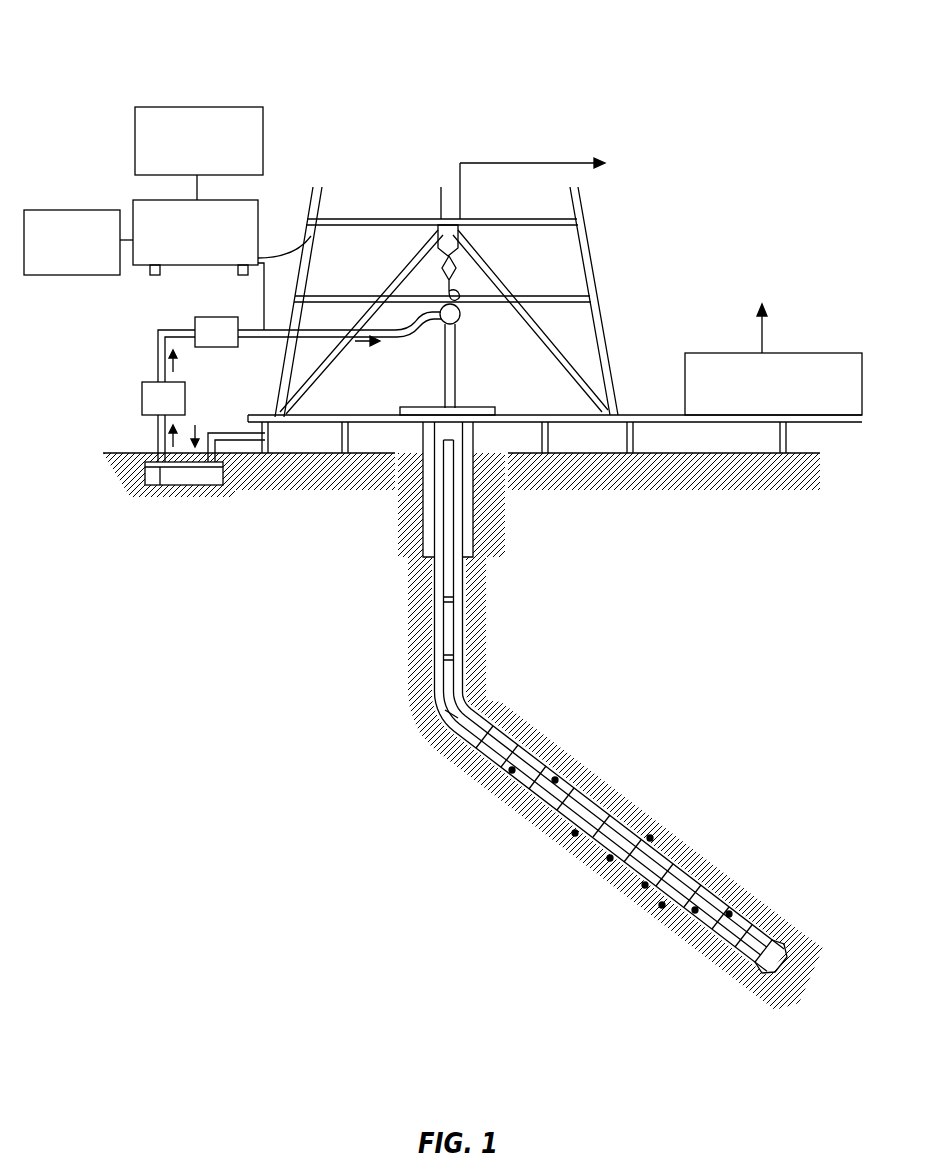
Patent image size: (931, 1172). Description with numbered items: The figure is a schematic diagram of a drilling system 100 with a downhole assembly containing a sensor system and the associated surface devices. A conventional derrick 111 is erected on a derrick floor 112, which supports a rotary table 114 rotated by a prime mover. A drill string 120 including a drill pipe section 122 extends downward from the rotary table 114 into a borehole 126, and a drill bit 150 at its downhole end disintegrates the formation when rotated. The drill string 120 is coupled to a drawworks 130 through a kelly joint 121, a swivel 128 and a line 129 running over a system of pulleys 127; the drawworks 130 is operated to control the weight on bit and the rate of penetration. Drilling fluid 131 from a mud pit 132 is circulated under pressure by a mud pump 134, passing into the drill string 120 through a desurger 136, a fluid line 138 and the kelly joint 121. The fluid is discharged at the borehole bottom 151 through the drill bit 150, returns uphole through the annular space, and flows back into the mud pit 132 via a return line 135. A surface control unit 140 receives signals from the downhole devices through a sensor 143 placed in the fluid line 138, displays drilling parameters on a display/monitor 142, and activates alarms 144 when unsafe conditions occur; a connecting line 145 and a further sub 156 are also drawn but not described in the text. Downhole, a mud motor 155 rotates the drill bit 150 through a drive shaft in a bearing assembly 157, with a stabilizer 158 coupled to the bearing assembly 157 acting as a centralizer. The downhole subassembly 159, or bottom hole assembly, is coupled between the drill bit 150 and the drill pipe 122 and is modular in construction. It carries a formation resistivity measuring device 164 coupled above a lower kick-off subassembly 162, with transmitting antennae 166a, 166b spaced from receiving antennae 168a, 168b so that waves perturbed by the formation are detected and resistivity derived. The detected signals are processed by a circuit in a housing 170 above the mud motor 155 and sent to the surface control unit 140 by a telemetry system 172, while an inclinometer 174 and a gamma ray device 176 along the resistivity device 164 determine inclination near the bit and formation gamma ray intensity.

The drilling system 100 is at (120, 48).
The derrick 111 is at (598, 288).
The derrick floor 112 is at (622, 413).
The rotary table 114 is at (472, 407).
The drill string 120 is at (462, 580).
The kelly joint 121 is at (458, 360).
The drill pipe section 122 is at (436, 640).
The borehole 126 is at (480, 700).
The system of pulleys 127 is at (498, 712).
The swivel 128 is at (440, 320).
The line 129 is at (460, 215).
The drawworks 130 is at (745, 353).
The drilling fluid 131 is at (160, 487).
The mud pit 132 is at (210, 487).
The mud pump 134 is at (142, 395).
The return line 135 is at (292, 440).
The desurger 136 is at (200, 316).
The fluid line 138 is at (257, 347).
The surface control unit 140 is at (257, 200).
The display/monitor 142 is at (237, 92).
The sensor 143 is at (263, 322).
The alarms 144 is at (60, 210).
The communication line 145 is at (311, 243).
The drill bit 150 is at (800, 960).
The borehole bottom 151 is at (770, 995).
The mud motor 155 is at (562, 750).
The drill collar 156 is at (582, 777).
The bearing assembly 157 is at (722, 950).
The stabilizer 158 is at (758, 925).
The downhole subassembly 159 is at (586, 708).
The lower kick-off subassembly 162 is at (737, 900).
The formation resistivity measuring device 164 is at (645, 885).
The transmitting antenna 166a is at (578, 835).
The transmitting antenna 166b is at (662, 905).
The receiving antenna 168a is at (612, 860).
The receiving antenna 168b is at (648, 840).
The housing 170 is at (472, 740).
The telemetry system 172 is at (445, 690).
The inclinometer 174 is at (685, 868).
The gamma ray device 176 is at (707, 893).